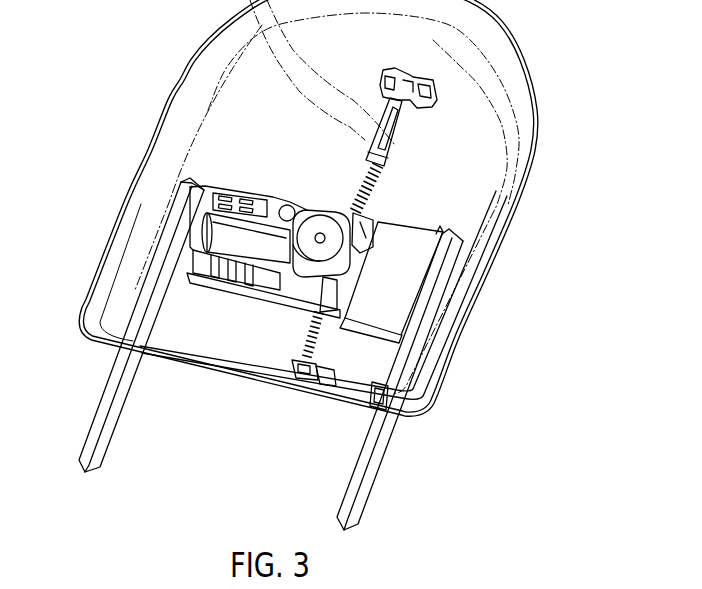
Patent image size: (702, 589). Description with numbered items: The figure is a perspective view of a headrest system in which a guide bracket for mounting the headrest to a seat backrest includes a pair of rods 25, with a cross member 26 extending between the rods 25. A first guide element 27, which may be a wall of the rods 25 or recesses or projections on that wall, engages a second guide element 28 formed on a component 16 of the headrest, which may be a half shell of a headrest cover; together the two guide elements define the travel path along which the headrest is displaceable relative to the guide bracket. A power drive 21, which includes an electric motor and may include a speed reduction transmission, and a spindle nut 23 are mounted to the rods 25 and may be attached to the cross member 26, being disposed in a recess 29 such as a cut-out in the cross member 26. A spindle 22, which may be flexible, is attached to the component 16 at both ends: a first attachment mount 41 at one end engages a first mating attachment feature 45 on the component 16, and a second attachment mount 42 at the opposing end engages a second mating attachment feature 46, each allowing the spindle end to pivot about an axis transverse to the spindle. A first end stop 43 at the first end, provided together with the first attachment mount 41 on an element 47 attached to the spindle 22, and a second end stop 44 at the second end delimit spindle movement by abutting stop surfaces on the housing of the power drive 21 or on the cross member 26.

The component of the headrest 16 is at (520, 108).
The power drive 21 is at (212, 237).
The spindle 22 is at (358, 203).
The spindle nut 23 is at (355, 247).
The rods 25 is at (92, 433).
The cross member 26 is at (384, 281).
The first guide element 27 is at (392, 416).
The second guide element 28 is at (408, 370).
The recess 29 is at (215, 203).
The first attachment mount 41 is at (404, 78).
The second attachment mount 42 is at (305, 377).
The first end stop 43 is at (384, 173).
The second end stop 44 is at (287, 368).
The first mating attachment feature 45 is at (431, 88).
The second mating attachment feature 46 is at (322, 380).
The element 47 is at (392, 141).